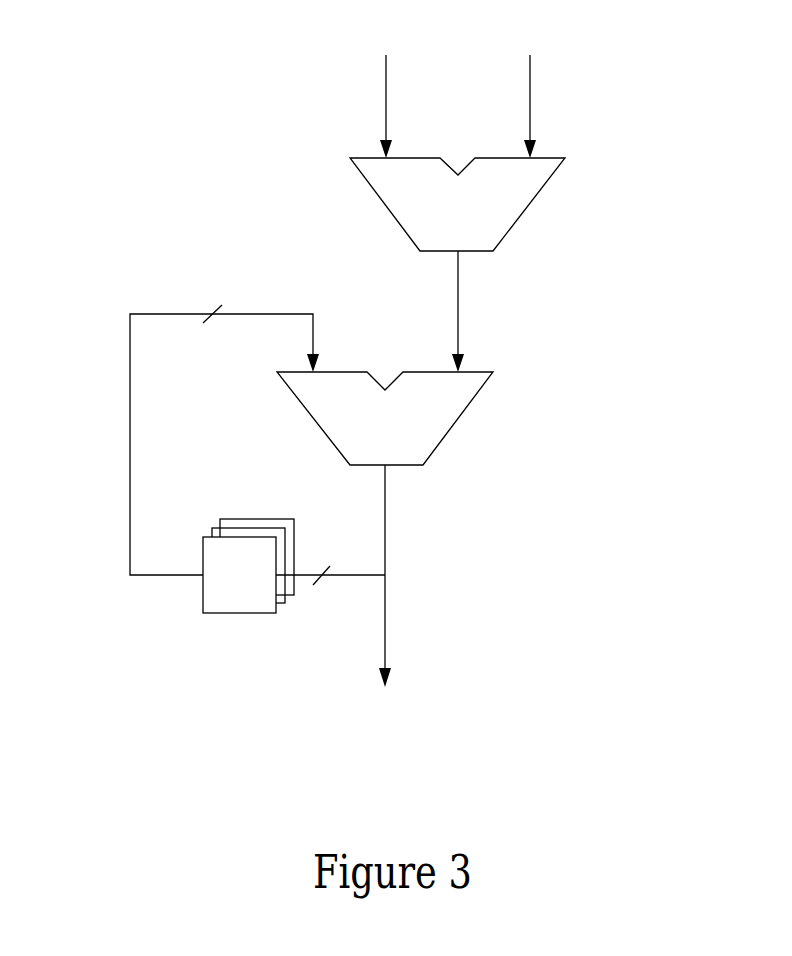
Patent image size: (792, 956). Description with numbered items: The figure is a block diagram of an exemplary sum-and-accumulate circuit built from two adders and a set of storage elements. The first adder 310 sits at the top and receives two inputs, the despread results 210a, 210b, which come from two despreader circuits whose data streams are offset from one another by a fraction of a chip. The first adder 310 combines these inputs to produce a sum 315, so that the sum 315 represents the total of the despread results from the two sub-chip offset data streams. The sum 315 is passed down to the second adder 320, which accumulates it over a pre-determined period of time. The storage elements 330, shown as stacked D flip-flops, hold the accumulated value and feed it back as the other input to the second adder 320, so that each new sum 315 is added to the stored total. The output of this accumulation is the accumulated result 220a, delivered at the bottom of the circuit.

The despread result 210a is at (283, 106).
The despread result 210b is at (643, 106).
The adder 310 is at (532, 210).
The sum 315 is at (458, 313).
The adder 320 is at (452, 427).
The storage elements 330 is at (258, 520).
The accumulated result 220a is at (376, 601).